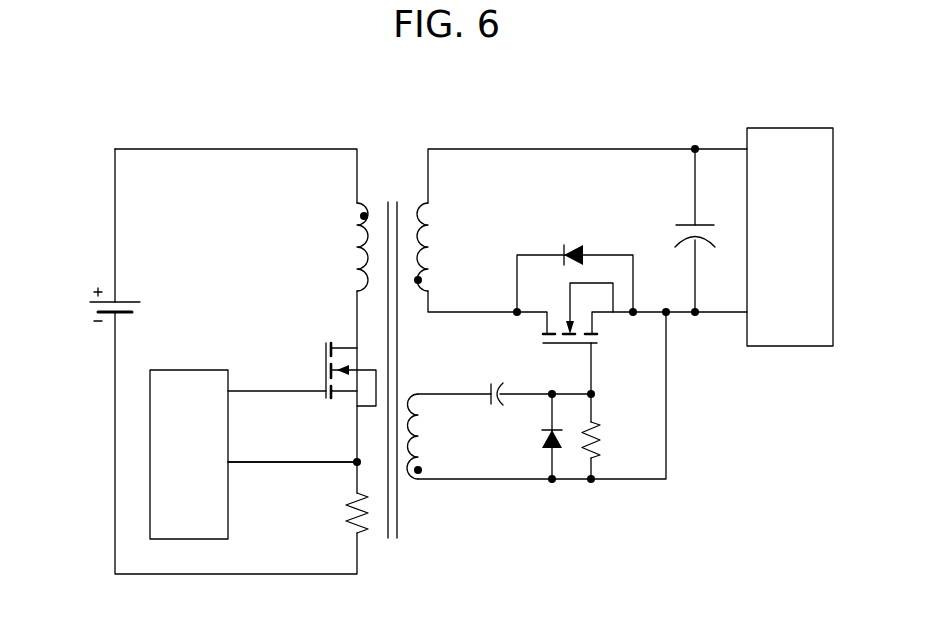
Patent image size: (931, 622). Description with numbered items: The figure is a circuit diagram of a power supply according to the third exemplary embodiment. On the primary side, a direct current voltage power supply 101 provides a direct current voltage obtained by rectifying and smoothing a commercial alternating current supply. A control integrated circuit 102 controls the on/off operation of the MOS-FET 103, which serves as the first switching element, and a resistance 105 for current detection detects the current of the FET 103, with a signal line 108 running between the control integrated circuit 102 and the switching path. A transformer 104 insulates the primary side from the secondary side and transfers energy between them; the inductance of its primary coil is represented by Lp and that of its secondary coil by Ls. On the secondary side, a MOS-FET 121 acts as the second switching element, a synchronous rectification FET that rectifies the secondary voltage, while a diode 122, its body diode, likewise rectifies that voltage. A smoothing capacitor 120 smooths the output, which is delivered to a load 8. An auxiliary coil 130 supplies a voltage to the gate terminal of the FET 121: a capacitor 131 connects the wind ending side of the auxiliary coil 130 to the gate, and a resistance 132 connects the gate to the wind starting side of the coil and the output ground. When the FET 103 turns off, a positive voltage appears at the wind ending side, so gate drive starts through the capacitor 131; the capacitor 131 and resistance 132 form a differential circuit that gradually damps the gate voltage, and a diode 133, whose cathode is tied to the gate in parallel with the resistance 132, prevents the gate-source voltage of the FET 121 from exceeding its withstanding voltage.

The load 8 is at (789, 127).
The direct current voltage power supply 101 is at (107, 322).
The control integrated circuit 102 is at (191, 368).
The MOS-FET 103 is at (322, 360).
The transformer 104 is at (393, 200).
The resistance for current detection 105 is at (344, 513).
The current detection signal line 108 is at (292, 444).
The smoothing capacitor 120 is at (675, 238).
The MOS-FET 121 is at (541, 336).
The diode 122 is at (566, 242).
The auxiliary coil 130 is at (421, 480).
The capacitor 131 is at (486, 401).
The resistance 132 is at (617, 421).
The diode 133 is at (540, 441).
The inductance of primary coil Lp is at (362, 237).
The inductance of secondary coil Ls is at (422, 238).